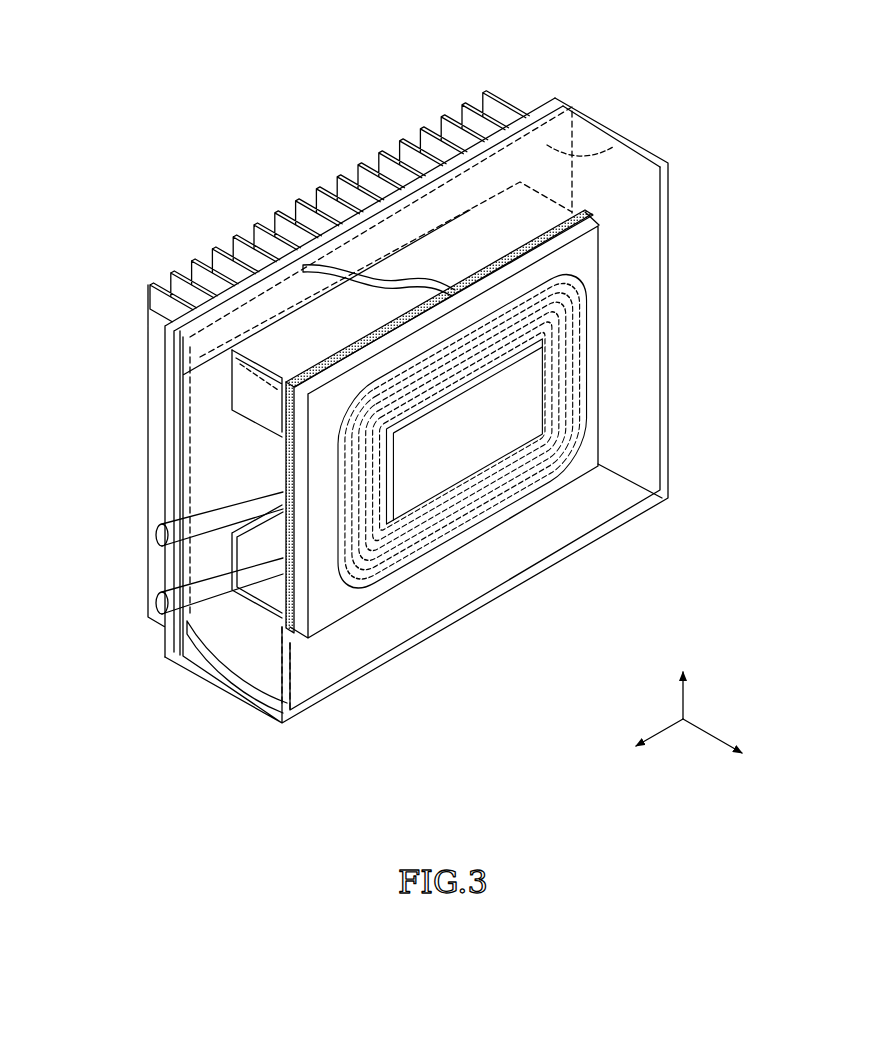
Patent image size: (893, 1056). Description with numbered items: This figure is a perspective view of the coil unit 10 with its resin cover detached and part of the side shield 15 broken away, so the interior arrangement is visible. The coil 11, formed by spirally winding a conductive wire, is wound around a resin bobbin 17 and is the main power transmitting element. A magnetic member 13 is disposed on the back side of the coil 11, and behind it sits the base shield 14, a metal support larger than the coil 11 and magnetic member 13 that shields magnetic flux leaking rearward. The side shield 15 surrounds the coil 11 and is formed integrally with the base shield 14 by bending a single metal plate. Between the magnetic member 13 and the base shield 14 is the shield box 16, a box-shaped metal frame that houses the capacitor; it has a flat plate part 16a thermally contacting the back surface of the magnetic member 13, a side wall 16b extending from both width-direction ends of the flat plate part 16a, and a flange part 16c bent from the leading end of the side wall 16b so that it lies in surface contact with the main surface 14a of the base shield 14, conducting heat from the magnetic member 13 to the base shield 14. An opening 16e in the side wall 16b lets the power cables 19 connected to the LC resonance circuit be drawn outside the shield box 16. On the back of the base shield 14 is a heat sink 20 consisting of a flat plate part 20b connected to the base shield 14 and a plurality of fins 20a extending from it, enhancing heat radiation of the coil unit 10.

The coil unit 10 is at (474, 38).
The coil 11 is at (503, 430).
The magnetic member 13 is at (588, 208).
The base shield 14 is at (572, 99).
The main surface 14a is at (545, 195).
The side shield 15 is at (628, 518).
The shield box 16 is at (532, 208).
The flat plate part 16a is at (285, 437).
The side wall 16b is at (265, 362).
The flange part 16c is at (232, 385).
The opening 16e is at (245, 460).
The resin bobbin 17 is at (578, 323).
The power cable 19 is at (155, 600).
The heat sink 20 is at (420, 337).
The fins 20a is at (500, 96).
The flat plate part 20b is at (556, 100).